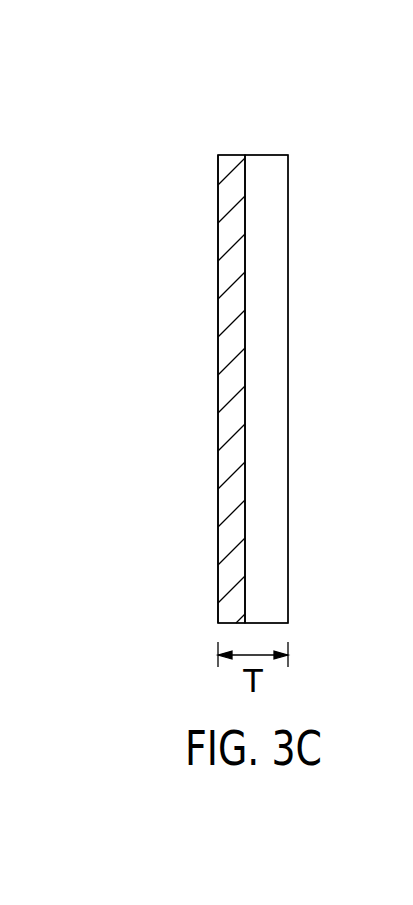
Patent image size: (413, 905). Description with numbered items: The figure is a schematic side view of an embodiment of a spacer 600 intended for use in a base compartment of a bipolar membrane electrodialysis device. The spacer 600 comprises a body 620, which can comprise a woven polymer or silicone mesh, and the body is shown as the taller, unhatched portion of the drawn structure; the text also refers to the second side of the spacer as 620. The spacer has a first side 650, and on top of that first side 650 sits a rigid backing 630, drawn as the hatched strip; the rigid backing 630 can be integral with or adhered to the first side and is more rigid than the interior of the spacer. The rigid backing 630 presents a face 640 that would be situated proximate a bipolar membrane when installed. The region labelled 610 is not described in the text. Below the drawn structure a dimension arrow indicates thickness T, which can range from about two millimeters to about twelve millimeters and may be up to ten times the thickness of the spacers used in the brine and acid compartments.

The spacer 600 is at (298, 114).
The first layer 610 is at (268, 517).
The body 620 is at (300, 357).
The rigid backing 630 is at (230, 537).
The face 640 is at (208, 400).
The first side 650 is at (256, 261).